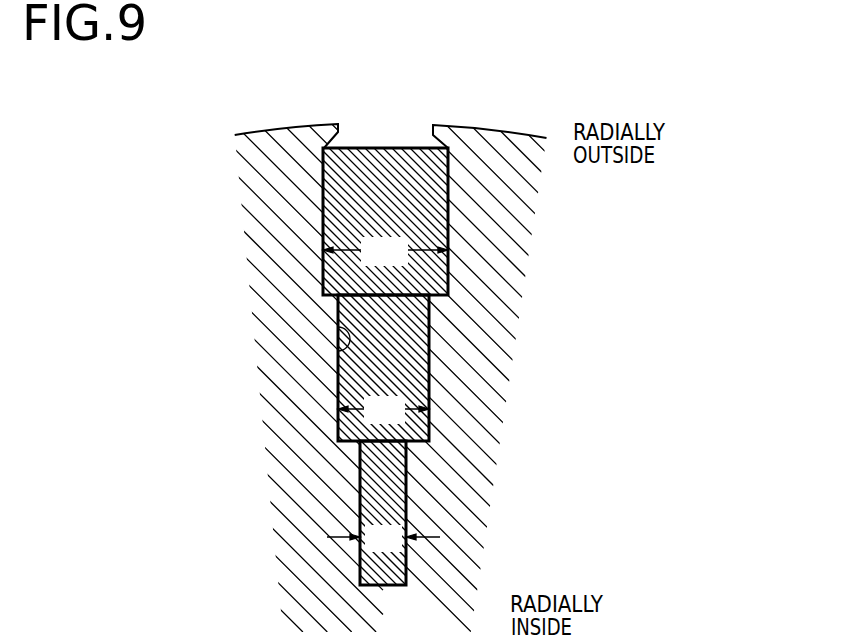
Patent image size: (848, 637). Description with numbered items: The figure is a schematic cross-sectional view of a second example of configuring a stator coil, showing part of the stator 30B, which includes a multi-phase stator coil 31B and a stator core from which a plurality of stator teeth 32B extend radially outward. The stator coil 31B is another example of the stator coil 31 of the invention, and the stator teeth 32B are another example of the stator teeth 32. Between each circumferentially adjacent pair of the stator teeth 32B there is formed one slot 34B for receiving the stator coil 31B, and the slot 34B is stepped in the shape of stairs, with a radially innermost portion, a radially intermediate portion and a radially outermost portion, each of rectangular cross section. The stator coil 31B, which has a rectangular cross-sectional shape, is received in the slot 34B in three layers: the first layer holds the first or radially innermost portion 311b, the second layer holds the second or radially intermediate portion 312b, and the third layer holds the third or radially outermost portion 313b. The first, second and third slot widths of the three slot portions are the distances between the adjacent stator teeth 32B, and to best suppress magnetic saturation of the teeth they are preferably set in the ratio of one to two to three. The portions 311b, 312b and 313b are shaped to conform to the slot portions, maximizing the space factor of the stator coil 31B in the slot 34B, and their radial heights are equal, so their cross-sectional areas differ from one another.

The stator teeth 32B is at (280, 162).
The stator teeth 32 is at (424, 346).
The stator coil 31B is at (424, 365).
The stator coil 31 is at (424, 365).
The third portion of the stator coil 313b is at (410, 205).
The second portion of the stator coil 312b is at (405, 373).
The first portion of the stator coil 311b is at (474, 513).
The slot 34B is at (340, 327).
The stator 30B is at (215, 296).